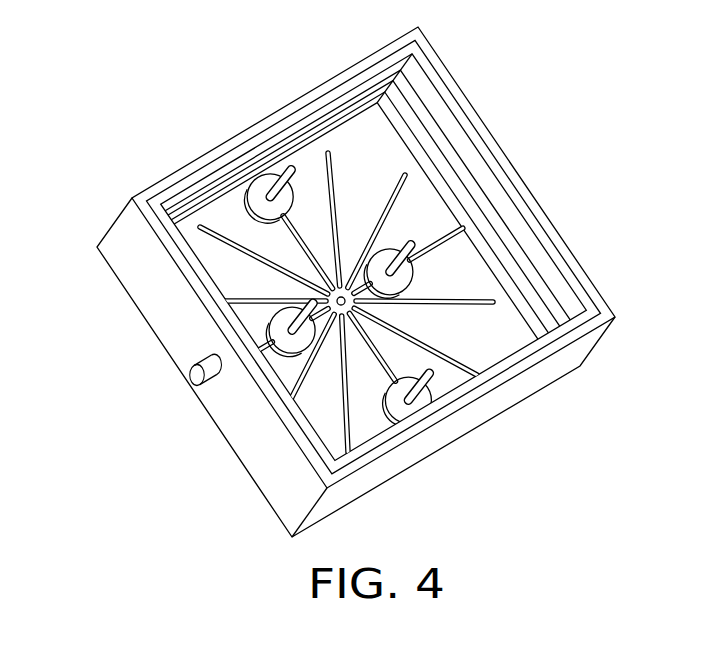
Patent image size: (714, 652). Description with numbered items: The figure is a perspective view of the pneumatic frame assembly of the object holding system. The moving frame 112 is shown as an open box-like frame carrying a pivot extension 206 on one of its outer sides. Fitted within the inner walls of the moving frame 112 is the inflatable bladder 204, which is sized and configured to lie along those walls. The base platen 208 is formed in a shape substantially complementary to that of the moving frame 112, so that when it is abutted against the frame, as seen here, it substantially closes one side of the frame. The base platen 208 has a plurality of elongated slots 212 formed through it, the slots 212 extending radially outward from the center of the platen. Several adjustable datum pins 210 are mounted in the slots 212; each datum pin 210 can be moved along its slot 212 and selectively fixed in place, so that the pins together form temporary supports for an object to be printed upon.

The moving frame 112 is at (122, 257).
The inflatable bladder 204 is at (456, 117).
The pivot extension 206 is at (192, 378).
The base platen 208 is at (473, 270).
The adjustable datum pins 210 is at (253, 182).
The elongated slots 212 is at (335, 180).